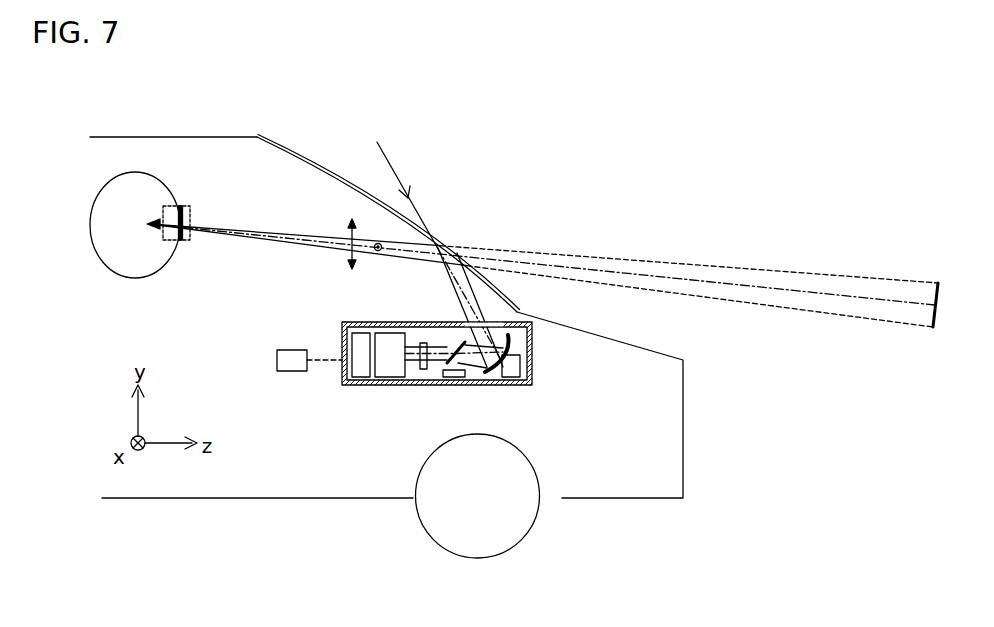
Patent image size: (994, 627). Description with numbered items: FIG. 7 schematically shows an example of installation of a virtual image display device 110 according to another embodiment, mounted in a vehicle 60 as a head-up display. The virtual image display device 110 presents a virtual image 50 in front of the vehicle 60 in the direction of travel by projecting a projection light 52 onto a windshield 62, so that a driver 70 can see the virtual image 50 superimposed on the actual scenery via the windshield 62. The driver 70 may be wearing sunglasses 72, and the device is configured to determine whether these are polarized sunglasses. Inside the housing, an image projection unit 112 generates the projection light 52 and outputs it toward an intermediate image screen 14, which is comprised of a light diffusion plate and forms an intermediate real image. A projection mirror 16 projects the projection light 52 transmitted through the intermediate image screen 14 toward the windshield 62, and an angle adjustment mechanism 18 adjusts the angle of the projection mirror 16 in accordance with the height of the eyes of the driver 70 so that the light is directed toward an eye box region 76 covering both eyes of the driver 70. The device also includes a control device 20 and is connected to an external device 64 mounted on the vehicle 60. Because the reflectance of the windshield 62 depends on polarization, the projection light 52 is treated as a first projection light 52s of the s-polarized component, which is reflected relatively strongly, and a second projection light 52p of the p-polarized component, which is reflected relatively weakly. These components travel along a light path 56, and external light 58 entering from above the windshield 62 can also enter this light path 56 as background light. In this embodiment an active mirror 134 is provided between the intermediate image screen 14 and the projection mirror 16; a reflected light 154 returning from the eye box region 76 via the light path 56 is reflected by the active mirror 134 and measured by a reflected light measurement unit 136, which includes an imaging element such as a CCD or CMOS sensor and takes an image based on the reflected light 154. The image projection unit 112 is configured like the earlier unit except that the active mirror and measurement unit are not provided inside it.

The vehicle 60 is at (167, 127).
The windshield 62 is at (307, 157).
The driver 70 is at (92, 193).
The sunglasses 72 is at (184, 207).
The eye box region 76 is at (181, 242).
The projection light 52 is at (336, 236).
The second projection light 52p is at (340, 256).
The first projection light 52s is at (377, 252).
The virtual image 50 is at (937, 270).
The external light 58 is at (390, 159).
The light path 56 is at (476, 288).
The virtual image display device 110 is at (330, 326).
The external device 64 is at (277, 360).
The control device 20 is at (352, 370).
The image projection unit 112 is at (390, 378).
The intermediate image screen 14 is at (423, 370).
The active mirror 134 is at (457, 340).
The reflected light measurement unit 136 is at (455, 378).
The projection mirror 16 is at (513, 341).
The reflected light 154 is at (462, 368).
The angle adjustment mechanism 18 is at (520, 365).